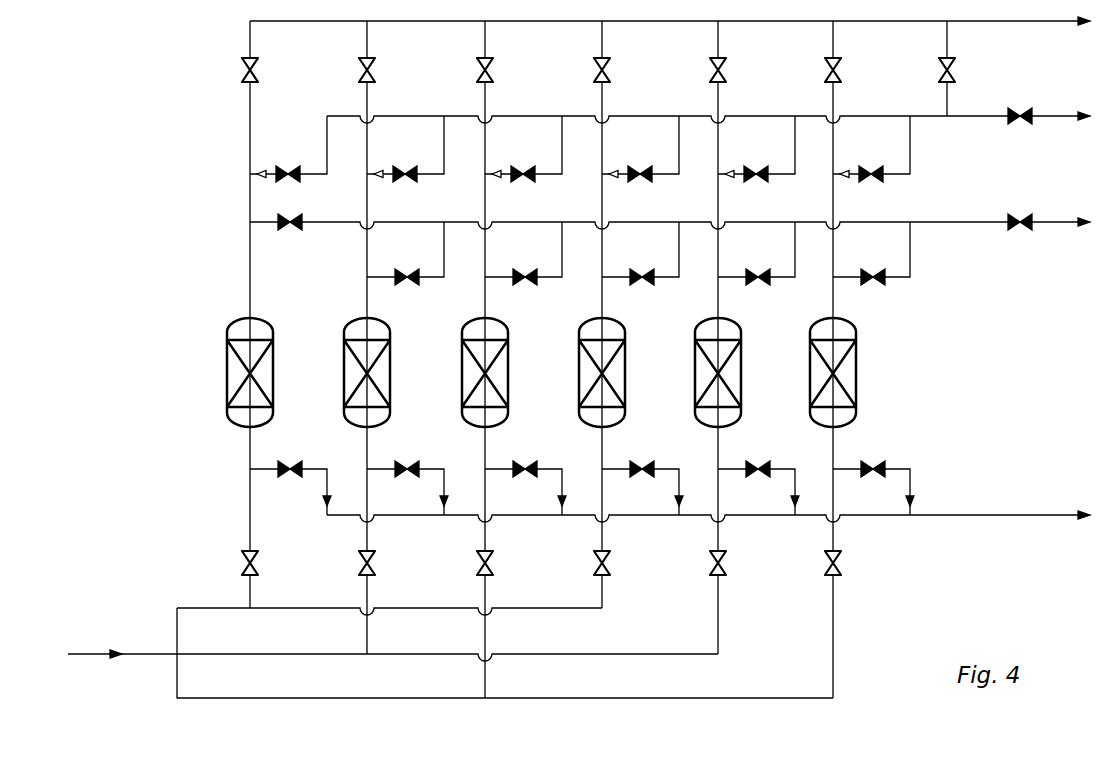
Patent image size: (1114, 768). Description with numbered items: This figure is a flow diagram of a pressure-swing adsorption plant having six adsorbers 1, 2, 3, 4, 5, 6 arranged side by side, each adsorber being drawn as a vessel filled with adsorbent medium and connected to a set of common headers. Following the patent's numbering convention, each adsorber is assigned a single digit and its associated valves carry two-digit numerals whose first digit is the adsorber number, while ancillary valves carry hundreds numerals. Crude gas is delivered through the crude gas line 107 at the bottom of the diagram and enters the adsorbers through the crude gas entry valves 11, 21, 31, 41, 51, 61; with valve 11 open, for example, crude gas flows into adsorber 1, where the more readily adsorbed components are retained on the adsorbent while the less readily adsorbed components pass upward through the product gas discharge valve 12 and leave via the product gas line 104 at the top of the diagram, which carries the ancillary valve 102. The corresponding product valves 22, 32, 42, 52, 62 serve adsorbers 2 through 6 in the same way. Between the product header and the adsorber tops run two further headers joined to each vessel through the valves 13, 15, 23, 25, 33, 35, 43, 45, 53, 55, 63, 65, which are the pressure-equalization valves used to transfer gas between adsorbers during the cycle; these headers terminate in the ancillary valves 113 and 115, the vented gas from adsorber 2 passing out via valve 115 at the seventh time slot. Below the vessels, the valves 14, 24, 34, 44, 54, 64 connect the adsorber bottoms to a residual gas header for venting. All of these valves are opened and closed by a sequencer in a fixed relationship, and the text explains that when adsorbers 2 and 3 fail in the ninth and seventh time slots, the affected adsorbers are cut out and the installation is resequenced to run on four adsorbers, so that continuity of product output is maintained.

The adsorber 1 is at (273, 372).
The adsorber 2 is at (390, 372).
The adsorber 3 is at (508, 372).
The adsorber 4 is at (625, 372).
The adsorber 5 is at (741, 372).
The adsorber 6 is at (856, 372).
The crude gas entry valve 11 is at (258, 564).
The product gas discharge valve 12 is at (258, 71).
The pressure equalization valve 13 is at (295, 230).
The valve 14 is at (290, 478).
The pressure equalization valve 15 is at (285, 165).
The crude gas entry valve 21 is at (375, 564).
The product gas discharge valve 22 is at (375, 71).
The pressure equalization valve 23 is at (409, 270).
The valve 24 is at (407, 478).
The pressure equalization valve 25 is at (402, 165).
The crude gas entry valve 31 is at (493, 564).
The product gas discharge valve 32 is at (493, 71).
The pressure equalization valve 33 is at (527, 270).
The valve 34 is at (525, 478).
The pressure equalization valve 35 is at (520, 165).
The crude gas entry valve 41 is at (610, 564).
The product gas discharge valve 42 is at (610, 71).
The pressure equalization valve 43 is at (644, 270).
The valve 44 is at (642, 478).
The pressure equalization valve 45 is at (637, 165).
The crude gas entry valve 51 is at (726, 564).
The product gas discharge valve 52 is at (726, 71).
The pressure equalization valve 53 is at (760, 270).
The valve 54 is at (758, 478).
The pressure equalization valve 55 is at (753, 165).
The crude gas entry valve 61 is at (841, 564).
The product gas discharge valve 62 is at (841, 71).
The pressure equalization valve 63 is at (875, 270).
The valve 64 is at (873, 478).
The pressure equalization valve 65 is at (868, 165).
The ancillary valve 102 is at (955, 71).
The product gas line 104 is at (783, 23).
The crude gas line 107 is at (131, 652).
The ancillary valve 113 is at (1016, 232).
The ancillary vent valve 115 is at (1016, 126).